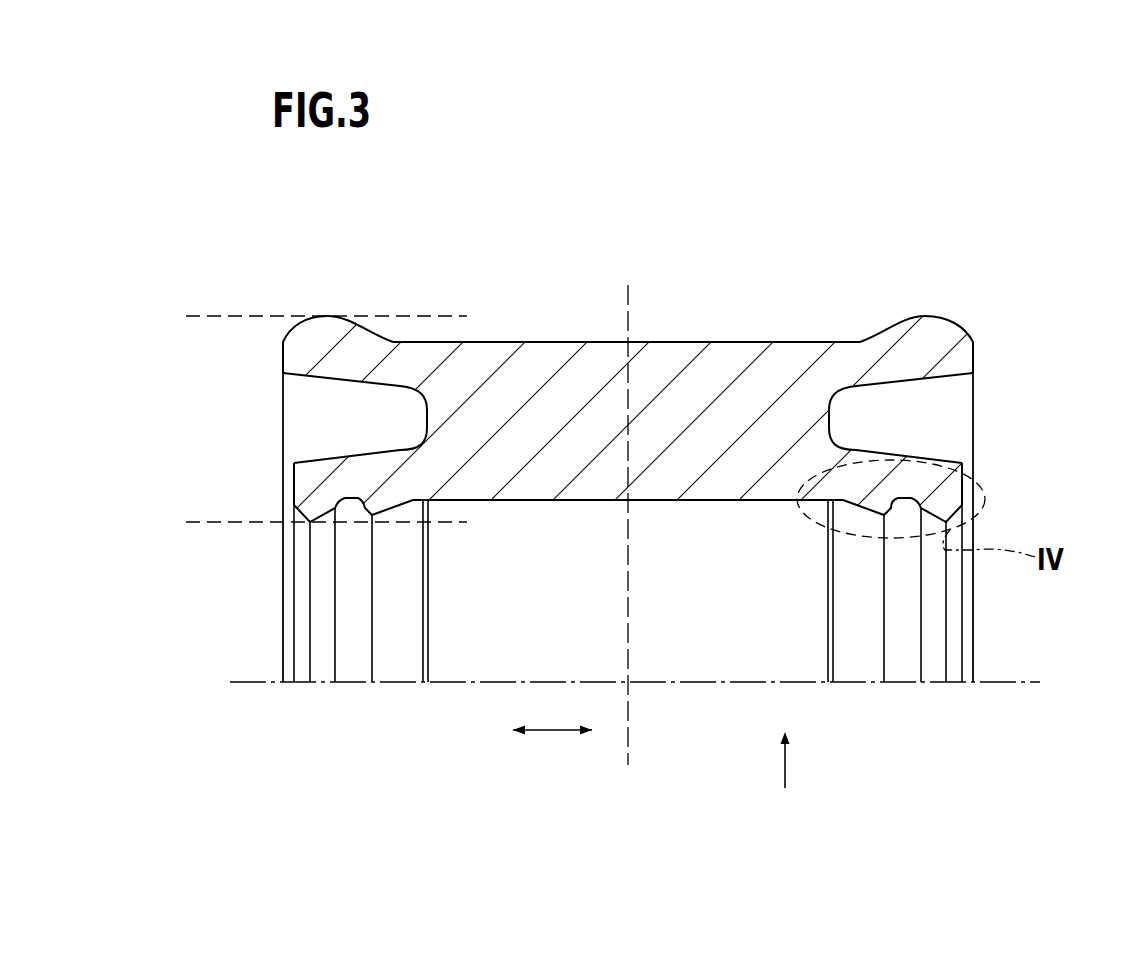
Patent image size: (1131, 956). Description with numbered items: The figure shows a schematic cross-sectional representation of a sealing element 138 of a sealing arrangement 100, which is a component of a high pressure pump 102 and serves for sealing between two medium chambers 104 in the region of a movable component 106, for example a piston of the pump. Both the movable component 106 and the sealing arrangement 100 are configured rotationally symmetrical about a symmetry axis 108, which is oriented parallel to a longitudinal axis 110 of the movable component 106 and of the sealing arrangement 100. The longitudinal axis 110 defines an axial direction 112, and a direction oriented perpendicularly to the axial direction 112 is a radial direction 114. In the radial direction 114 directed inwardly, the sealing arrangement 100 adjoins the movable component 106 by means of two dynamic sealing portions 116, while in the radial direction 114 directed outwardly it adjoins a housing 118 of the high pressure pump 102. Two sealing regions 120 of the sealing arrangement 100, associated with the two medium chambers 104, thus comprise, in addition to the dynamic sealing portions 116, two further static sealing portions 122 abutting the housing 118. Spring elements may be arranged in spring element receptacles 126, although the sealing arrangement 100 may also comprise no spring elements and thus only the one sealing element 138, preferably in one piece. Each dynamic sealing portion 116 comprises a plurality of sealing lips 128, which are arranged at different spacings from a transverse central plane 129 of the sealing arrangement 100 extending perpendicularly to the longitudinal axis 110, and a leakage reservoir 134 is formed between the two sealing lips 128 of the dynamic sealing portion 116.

The sealing arrangement 100 is at (837, 240).
The high pressure pump 102 is at (775, 225).
The medium chambers 104 is at (237, 432).
The movable component 106 is at (220, 522).
The symmetry axis 108 is at (450, 682).
The longitudinal axis 110 is at (553, 730).
The axial direction 112 is at (548, 730).
The radial direction 114 is at (785, 770).
The dynamic sealing portions 116 is at (295, 525).
The housing 118 is at (398, 317).
The sealing regions 120 is at (281, 308).
The static sealing portions 122 is at (318, 309).
The spring element receptacles 126 is at (937, 408).
The sealing lips 128 is at (937, 522).
The transverse central plane 129 is at (628, 707).
The leakage reservoir 134 is at (910, 493).
The sealing element 138 is at (545, 365).